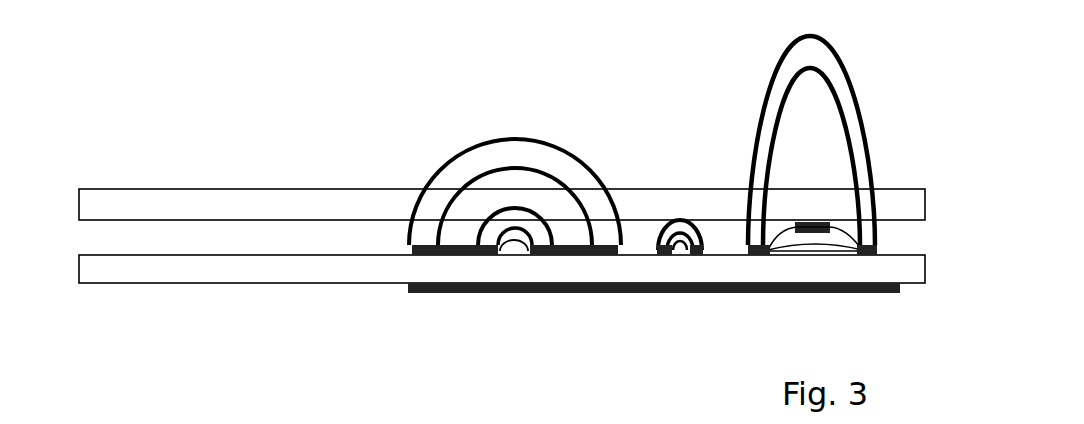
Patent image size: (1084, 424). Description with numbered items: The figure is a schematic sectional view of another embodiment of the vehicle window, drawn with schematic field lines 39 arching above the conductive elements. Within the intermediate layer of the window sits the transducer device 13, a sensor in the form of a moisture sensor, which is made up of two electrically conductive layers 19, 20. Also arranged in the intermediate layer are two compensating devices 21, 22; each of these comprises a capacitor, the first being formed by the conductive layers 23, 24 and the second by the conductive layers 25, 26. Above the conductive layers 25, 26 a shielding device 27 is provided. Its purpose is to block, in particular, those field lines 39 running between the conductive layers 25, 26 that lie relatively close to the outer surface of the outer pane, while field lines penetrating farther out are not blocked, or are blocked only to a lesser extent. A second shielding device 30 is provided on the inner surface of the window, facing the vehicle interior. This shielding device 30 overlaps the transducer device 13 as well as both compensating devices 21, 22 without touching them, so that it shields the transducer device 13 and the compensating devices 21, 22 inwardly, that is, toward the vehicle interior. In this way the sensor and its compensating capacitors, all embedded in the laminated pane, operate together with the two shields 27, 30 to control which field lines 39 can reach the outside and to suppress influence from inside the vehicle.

The transducer device 13 is at (508, 262).
The electrically conductive layer 19 is at (432, 256).
The electrically conductive layer 20 is at (548, 256).
The compensating device 21 is at (667, 226).
The compensating device 22 is at (843, 256).
The conductive layer 23 is at (670, 254).
The conductive layer 24 is at (685, 254).
The conductive layer 25 is at (748, 246).
The conductive layer 26 is at (876, 248).
The shielding device 27 is at (797, 230).
The shielding device 30 is at (782, 248).
The field lines 39 is at (447, 162).